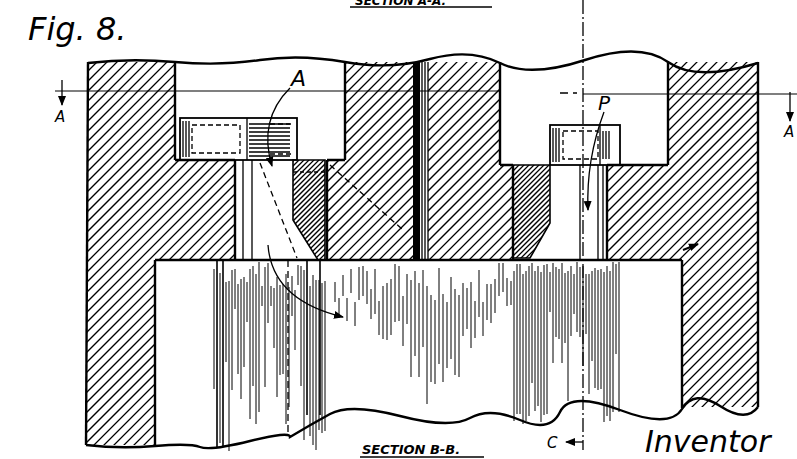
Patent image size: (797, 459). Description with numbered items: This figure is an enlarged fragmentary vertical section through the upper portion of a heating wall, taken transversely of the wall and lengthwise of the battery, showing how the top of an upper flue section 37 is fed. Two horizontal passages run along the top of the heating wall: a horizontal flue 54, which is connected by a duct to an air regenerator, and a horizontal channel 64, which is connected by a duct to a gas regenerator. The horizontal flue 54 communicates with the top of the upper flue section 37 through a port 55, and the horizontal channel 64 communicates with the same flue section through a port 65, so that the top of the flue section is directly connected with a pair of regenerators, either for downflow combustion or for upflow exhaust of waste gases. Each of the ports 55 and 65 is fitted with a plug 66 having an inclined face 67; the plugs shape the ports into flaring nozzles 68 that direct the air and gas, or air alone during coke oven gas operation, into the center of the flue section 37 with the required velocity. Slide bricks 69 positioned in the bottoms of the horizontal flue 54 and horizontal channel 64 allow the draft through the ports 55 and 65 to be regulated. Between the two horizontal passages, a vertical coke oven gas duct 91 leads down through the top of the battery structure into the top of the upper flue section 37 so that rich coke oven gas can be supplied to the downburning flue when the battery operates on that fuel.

The upper flue section 37 is at (418, 355).
The horizontal flue 54 is at (260, 111).
The port 55 is at (319, 210).
The horizontal channel 64 is at (584, 113).
The port 65 is at (560, 212).
The plug 66 is at (538, 193).
The inclined face 67 is at (537, 250).
The flaring nozzle 68 is at (627, 268).
The slide brick 69 is at (283, 140).
The vertical coke oven gas duct 91 is at (428, 62).